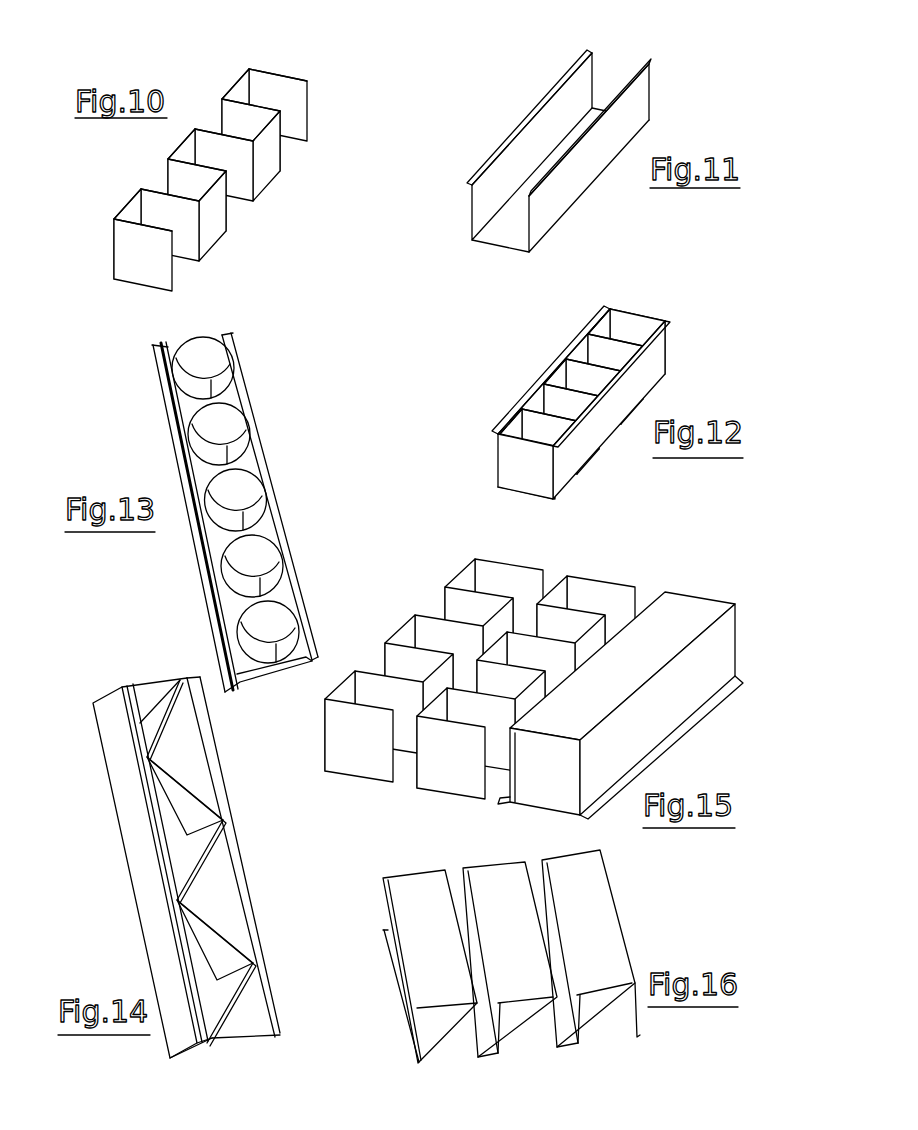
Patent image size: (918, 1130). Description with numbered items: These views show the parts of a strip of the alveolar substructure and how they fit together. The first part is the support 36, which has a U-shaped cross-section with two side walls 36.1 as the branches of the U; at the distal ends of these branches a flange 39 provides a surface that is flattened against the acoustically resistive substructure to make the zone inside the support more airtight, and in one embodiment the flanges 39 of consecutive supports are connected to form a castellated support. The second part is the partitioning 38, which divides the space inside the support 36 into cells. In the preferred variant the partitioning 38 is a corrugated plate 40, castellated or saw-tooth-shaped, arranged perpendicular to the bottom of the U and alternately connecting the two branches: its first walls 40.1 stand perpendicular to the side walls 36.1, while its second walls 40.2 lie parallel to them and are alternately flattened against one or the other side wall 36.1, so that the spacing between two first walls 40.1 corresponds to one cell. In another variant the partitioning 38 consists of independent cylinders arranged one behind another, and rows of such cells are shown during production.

In FIG. 11, the support 36 is at (608, 135).
In FIG. 12, the support 36 is at (558, 372).
In FIG. 13, the support 36 is at (200, 512).
In FIG. 14, the support 36 is at (161, 867).
In FIG. 15, the support 36 is at (581, 717).
In FIG. 16, the support 36 is at (520, 959).
In FIG. 11, the side walls 36.1 is at (553, 108).
In FIG. 12, the side walls 36.1 is at (577, 343).
In FIG. 10, the partitioning 38 is at (245, 180).
In FIG. 12, the partitioning 38 is at (516, 384).
In FIG. 13, the partitioning 38 is at (270, 477).
In FIG. 14, the partitioning 38 is at (207, 850).
In FIG. 15, the partitioning 38 is at (515, 649).
In FIG. 11, the flange 39 is at (585, 50).
In FIG. 12, the flange 39 is at (608, 305).
In FIG. 13, the flange 39 is at (197, 557).
In FIG. 14, the flange 39 is at (153, 860).
In FIG. 15, the flange 39 is at (577, 792).
In FIG. 16, the flange 39 is at (403, 1025).
In FIG. 10, the corrugated plate 40 is at (207, 237).
In FIG. 15, the corrugated plate 40 is at (610, 600).
In FIG. 10, the first walls 40.1 is at (258, 123).
In FIG. 12, the first walls 40.1 is at (533, 403).
In FIG. 10, the second walls 40.2 is at (230, 83).
In FIG. 12, the second walls 40.2 is at (587, 326).